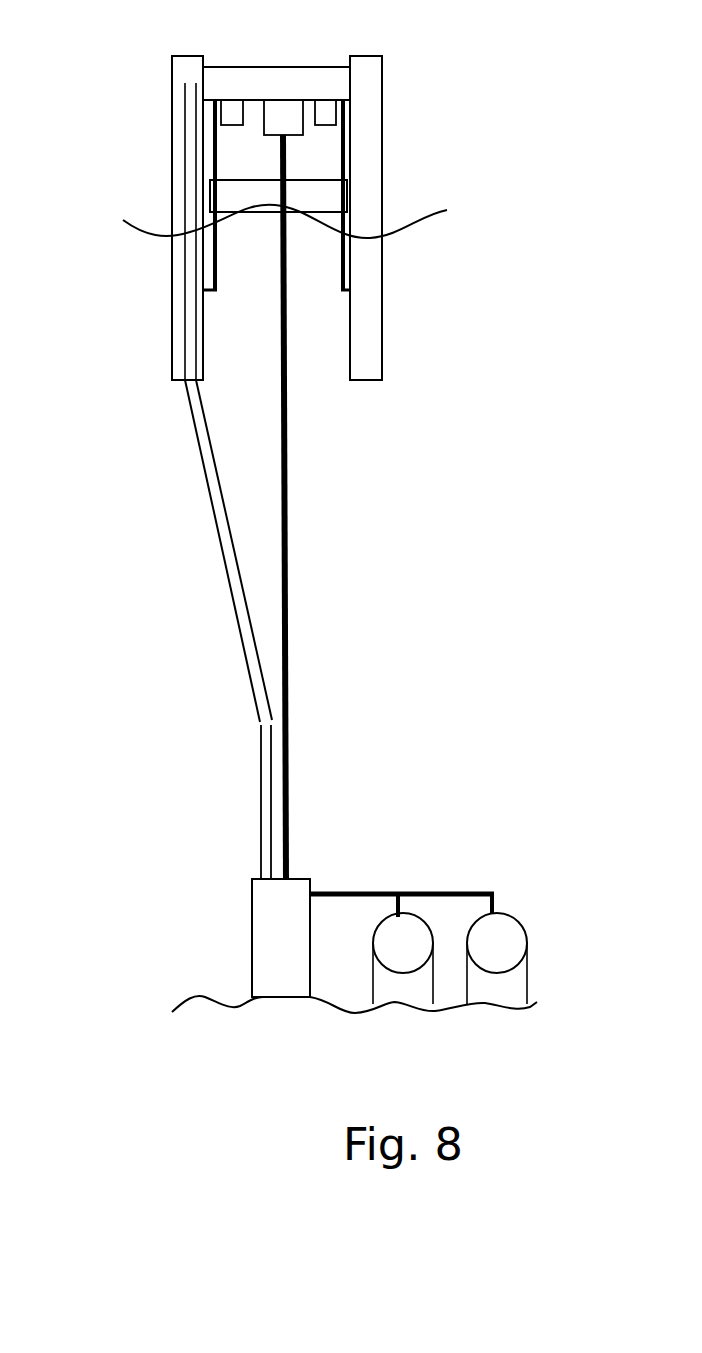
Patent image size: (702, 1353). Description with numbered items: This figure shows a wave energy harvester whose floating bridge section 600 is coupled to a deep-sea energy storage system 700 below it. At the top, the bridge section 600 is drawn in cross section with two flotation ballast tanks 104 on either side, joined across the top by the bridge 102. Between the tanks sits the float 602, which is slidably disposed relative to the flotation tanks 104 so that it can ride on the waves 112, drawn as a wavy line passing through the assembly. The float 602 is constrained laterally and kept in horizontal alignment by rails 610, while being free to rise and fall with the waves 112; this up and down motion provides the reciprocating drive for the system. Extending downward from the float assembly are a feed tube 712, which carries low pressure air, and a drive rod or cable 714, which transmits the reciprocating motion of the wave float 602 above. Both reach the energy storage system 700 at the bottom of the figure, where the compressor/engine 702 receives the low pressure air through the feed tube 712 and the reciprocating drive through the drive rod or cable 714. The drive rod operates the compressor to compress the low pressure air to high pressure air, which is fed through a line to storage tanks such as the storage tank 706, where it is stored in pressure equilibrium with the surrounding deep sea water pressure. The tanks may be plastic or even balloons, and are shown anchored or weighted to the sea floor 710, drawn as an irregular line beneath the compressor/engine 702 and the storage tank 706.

The bridge 102 is at (252, 65).
The flotation ballast tanks 104 is at (180, 53).
The waves 112 is at (152, 237).
The bridge section 600 is at (252, 238).
The float 602 is at (267, 175).
The rails 610 is at (217, 245).
The energy storage system 700 is at (361, 784).
The compressor/engine 702 is at (250, 933).
The storage tank 706 is at (512, 920).
The sea floor 710 is at (227, 1003).
The feed tube 712 is at (260, 820).
The drive rod or cable 714 is at (290, 812).